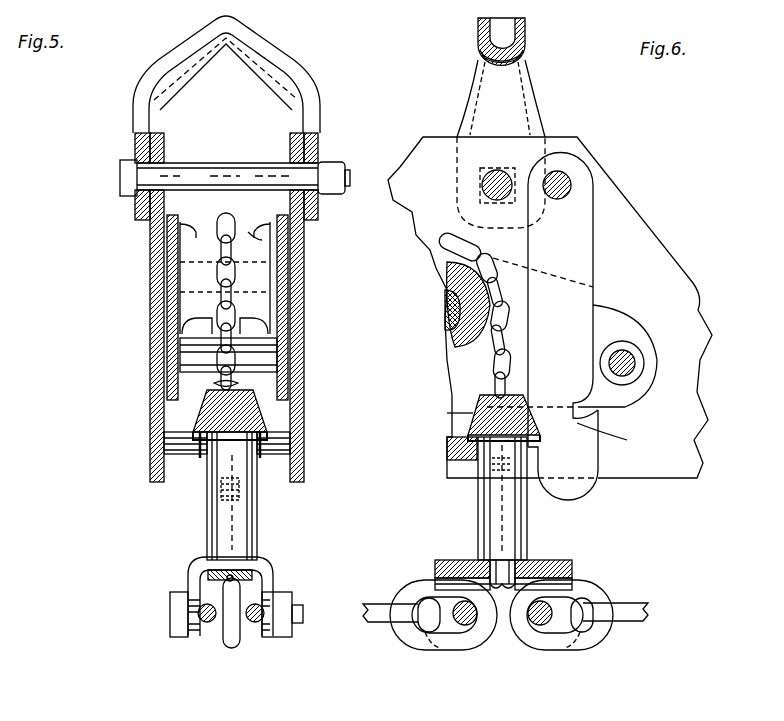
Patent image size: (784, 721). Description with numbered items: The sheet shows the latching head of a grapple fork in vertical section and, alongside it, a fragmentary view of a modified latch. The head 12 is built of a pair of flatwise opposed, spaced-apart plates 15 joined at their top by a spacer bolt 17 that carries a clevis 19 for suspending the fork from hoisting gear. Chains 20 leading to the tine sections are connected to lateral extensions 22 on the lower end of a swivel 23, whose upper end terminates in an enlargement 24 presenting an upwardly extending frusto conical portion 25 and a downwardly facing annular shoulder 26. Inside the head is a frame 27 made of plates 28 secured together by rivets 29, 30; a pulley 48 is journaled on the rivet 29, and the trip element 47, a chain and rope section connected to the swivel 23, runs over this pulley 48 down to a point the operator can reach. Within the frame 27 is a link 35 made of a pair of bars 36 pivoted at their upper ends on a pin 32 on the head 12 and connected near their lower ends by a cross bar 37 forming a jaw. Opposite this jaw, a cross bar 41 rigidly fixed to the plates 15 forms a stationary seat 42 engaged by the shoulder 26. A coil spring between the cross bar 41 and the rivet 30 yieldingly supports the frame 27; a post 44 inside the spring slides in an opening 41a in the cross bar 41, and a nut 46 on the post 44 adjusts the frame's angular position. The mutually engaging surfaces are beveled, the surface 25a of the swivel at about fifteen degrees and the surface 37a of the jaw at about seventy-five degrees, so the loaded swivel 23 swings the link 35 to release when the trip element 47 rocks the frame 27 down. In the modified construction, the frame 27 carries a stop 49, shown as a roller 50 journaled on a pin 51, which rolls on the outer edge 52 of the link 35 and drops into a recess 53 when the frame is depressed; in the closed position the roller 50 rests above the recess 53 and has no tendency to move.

In FIG. 5, the head 12 is at (288, 146).
In FIG. 6, the head 12 is at (667, 244).
In FIG. 5, the plates 15 is at (306, 357).
In FIG. 6, the plates 15 is at (683, 437).
In FIG. 5, the spacer bolt 17 is at (312, 177).
In FIG. 6, the spacer bolt 17 is at (497, 172).
In FIG. 5, the clevis 19 is at (248, 55).
In FIG. 6, the clevis 19 is at (470, 85).
In FIG. 5, the chains 20 is at (240, 635).
In FIG. 6, the chains 20 is at (400, 637).
In FIG. 5, the lateral extensions 22 is at (193, 578).
In FIG. 6, the lateral extensions 22 is at (440, 560).
In FIG. 5, the swivel 23 is at (253, 496).
In FIG. 6, the swivel 23 is at (480, 498).
In FIG. 5, the enlargement 24 is at (245, 413).
In FIG. 6, the enlargement 24 is at (513, 416).
In FIG. 6, the frusto conical portion 25 is at (463, 422).
In FIG. 6, the beveled surface 25a is at (467, 430).
In FIG. 5, the annular shoulder 26 is at (252, 437).
In FIG. 6, the annular shoulder 26 is at (490, 439).
In FIG. 5, the frame 27 is at (292, 298).
In FIG. 6, the frame 27 is at (646, 318).
In FIG. 5, the plates 28 is at (290, 325).
In FIG. 6, the plates 28 is at (640, 322).
In FIG. 6, the rivet 29 is at (440, 317).
In FIG. 5, the rivet 30 is at (195, 352).
In FIG. 6, the pin 32 is at (565, 185).
In FIG. 6, the link 35 is at (582, 243).
In FIG. 6, the bars 36 is at (580, 212).
In FIG. 6, the cross bar 37 is at (537, 470).
In FIG. 6, the beveled surface 37a is at (537, 440).
In FIG. 5, the cross bar 41 is at (204, 460).
In FIG. 6, the opening 41a is at (495, 470).
In FIG. 6, the stationary seat 42 is at (497, 424).
In FIG. 5, the post 44 is at (250, 506).
In FIG. 5, the nut 46 is at (245, 480).
In FIG. 5, the trip element 47 is at (222, 232).
In FIG. 6, the trip element 47 is at (503, 315).
In FIG. 5, the pulley 48 is at (245, 250).
In FIG. 6, the pulley 48 is at (447, 283).
In FIG. 5, the stop 49 is at (282, 262).
In FIG. 6, the stop 49 is at (641, 347).
In FIG. 6, the roller 50 is at (643, 374).
In FIG. 6, the pin 51 is at (637, 362).
In FIG. 6, the outer edge 52 is at (632, 312).
In FIG. 6, the recess 53 is at (616, 437).